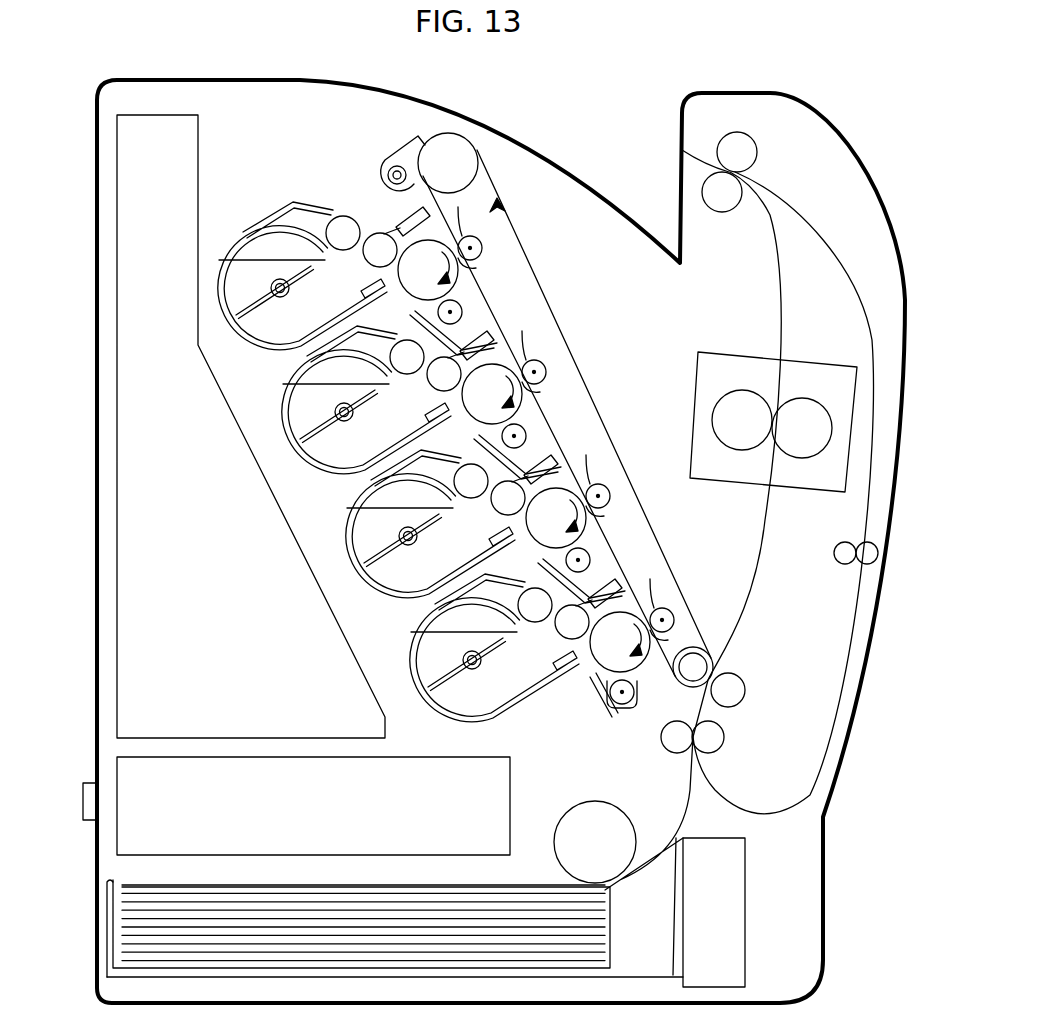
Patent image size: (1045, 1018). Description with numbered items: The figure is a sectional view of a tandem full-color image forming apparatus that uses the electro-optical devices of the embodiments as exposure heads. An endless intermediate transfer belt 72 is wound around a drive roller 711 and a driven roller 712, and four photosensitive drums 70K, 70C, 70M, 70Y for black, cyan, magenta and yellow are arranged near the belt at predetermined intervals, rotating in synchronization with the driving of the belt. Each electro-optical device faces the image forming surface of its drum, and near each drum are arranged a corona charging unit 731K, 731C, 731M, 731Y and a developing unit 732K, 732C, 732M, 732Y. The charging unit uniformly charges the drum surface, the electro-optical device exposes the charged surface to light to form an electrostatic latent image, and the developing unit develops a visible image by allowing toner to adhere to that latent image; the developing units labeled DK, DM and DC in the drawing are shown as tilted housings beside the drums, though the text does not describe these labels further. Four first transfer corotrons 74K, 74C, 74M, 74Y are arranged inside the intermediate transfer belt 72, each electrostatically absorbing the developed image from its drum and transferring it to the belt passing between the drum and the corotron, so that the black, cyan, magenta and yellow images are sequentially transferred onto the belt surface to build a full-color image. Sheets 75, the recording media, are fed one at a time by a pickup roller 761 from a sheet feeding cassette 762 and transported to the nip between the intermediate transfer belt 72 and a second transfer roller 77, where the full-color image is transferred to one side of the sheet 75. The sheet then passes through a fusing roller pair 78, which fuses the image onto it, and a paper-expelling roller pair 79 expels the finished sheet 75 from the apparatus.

The intermediate transfer belt 72 is at (537, 277).
The driven roller 712 is at (462, 133).
The drive roller 711 is at (708, 652).
The second transfer roller 77 is at (745, 686).
The fusing roller pair 78 is at (745, 352).
The paper-expelling roller pair 79 is at (742, 197).
The sheet 75 is at (340, 887).
The pickup roller 761 is at (563, 820).
The sheet feeding cassette 762 is at (107, 897).
The developing device DK is at (366, 292).
The developing device (magenta) DM is at (431, 415).
The developing device (cyan) DC is at (495, 539).
The photosensitive drum 70Y is at (458, 268).
The photosensitive drum 70M is at (522, 392).
The photosensitive drum 70C is at (586, 517).
The photosensitive drum 70K is at (630, 608).
The first transfer corotron 74Y is at (478, 240).
The first transfer corotron 74M is at (543, 362).
The first transfer corotron 74C is at (608, 488).
The first transfer corotron 74K is at (674, 620).
The corona charging unit 731Y is at (462, 306).
The corona charging unit 731M is at (527, 434).
The corona charging unit 731C is at (593, 556).
The corona charging unit 731K is at (630, 706).
The developing unit 732Y is at (380, 233).
The developing unit 732M is at (495, 352).
The developing unit 732C is at (585, 480).
The developing unit 732K is at (647, 605).